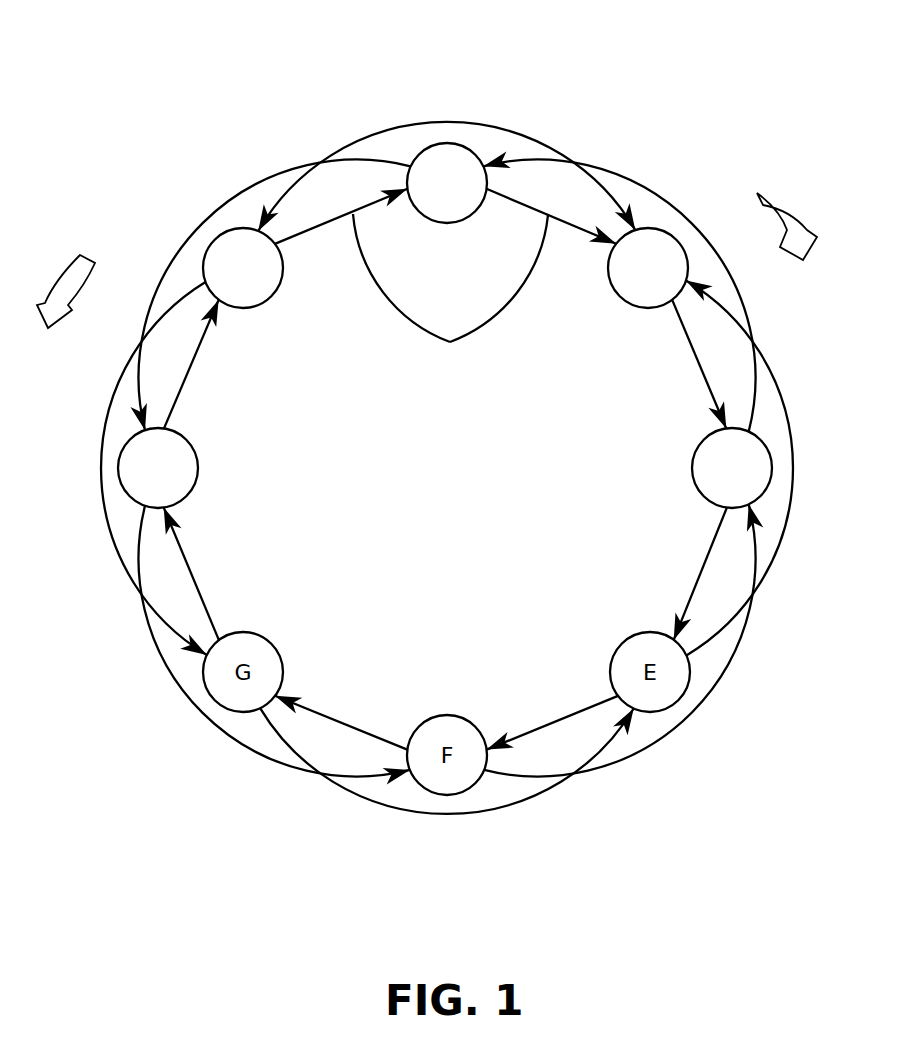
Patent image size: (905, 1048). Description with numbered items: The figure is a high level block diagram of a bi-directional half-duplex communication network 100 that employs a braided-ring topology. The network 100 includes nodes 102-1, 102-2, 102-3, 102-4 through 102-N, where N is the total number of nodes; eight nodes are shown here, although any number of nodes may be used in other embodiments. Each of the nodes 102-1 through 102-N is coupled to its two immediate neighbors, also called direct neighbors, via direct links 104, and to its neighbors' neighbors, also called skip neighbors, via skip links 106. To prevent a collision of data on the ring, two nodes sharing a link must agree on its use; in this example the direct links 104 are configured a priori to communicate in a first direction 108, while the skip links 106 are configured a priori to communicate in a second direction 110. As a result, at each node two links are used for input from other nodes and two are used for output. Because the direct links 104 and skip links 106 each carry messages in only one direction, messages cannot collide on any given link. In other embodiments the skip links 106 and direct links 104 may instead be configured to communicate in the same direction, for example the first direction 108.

The bi-directional half-duplex communication network 100 is at (158, 126).
The node 102-1 is at (283, 275).
The node 102-2 is at (437, 222).
The node 102-3 is at (612, 270).
The node 102-4 is at (693, 475).
The node 102-N is at (198, 472).
The direct links 104 is at (450, 293).
The skip links 106 is at (643, 178).
The first direction 108 is at (47, 288).
The second direction 110 is at (805, 215).